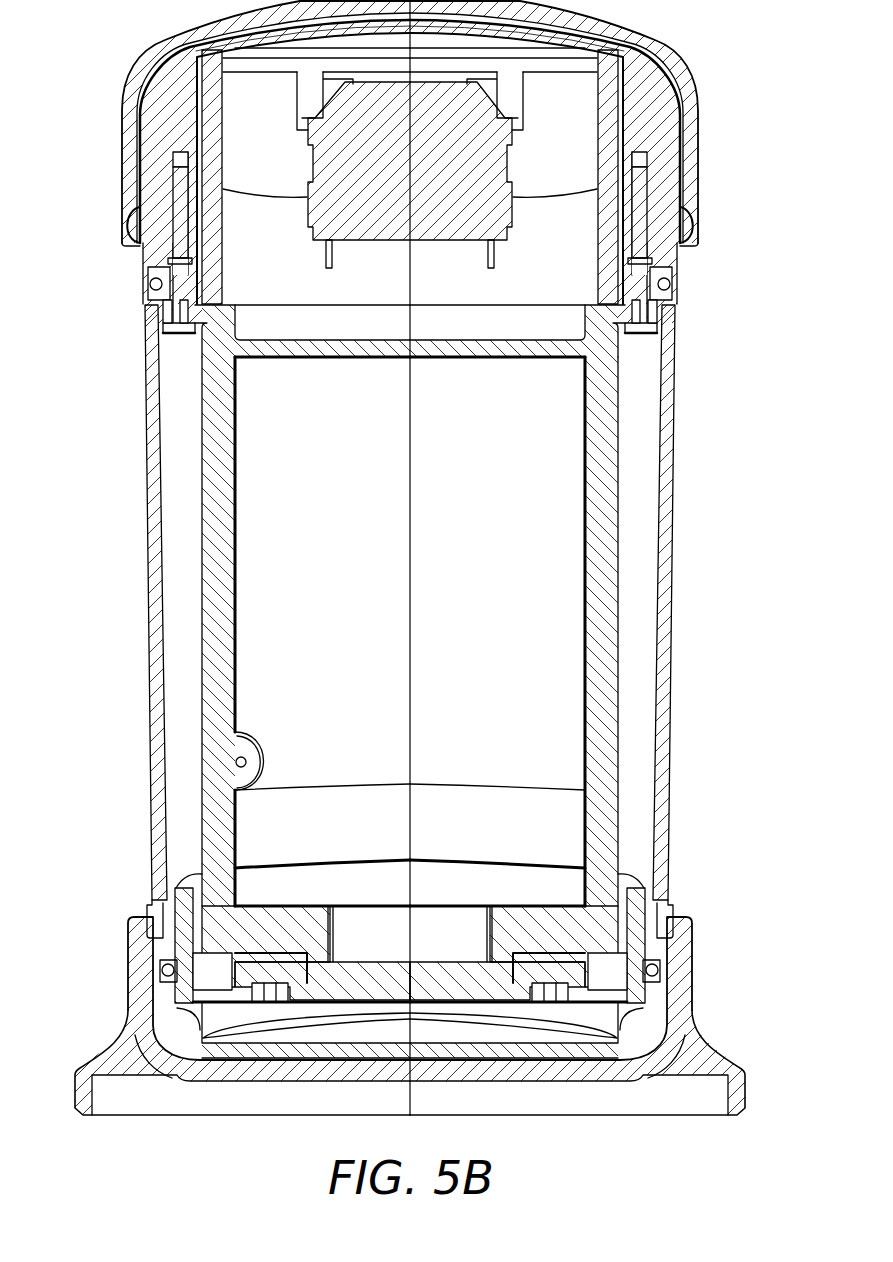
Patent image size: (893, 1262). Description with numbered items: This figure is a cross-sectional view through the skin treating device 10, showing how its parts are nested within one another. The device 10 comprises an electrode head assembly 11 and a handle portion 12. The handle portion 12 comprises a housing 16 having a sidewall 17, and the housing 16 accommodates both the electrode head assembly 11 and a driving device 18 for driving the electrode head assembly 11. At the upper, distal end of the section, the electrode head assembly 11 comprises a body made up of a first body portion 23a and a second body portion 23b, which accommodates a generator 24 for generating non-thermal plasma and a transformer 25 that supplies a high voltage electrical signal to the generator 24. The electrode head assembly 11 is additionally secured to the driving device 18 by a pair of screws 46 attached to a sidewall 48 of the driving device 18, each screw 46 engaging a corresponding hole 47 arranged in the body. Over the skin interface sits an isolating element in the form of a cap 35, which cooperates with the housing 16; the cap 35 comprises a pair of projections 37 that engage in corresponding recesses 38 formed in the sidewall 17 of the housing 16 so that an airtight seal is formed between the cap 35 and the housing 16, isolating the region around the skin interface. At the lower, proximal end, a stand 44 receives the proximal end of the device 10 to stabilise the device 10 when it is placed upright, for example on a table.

The device 10 is at (108, 562).
The electrode head assembly 11 is at (240, 260).
The handle portion 12 is at (142, 763).
The housing 16 is at (152, 885).
The sidewall 17 is at (160, 827).
The driving device 18 is at (262, 636).
The first body portion 23a is at (207, 82).
The second body portion 23b is at (167, 107).
The generator 24 is at (277, 86).
The transformer 25 is at (497, 160).
The cap 35 is at (684, 90).
The projections 37 is at (138, 220).
The recesses 38 is at (138, 243).
The stand 44 is at (688, 987).
The screws 46 is at (177, 192).
The holes 47 is at (171, 153).
The sidewall 48 is at (202, 463).